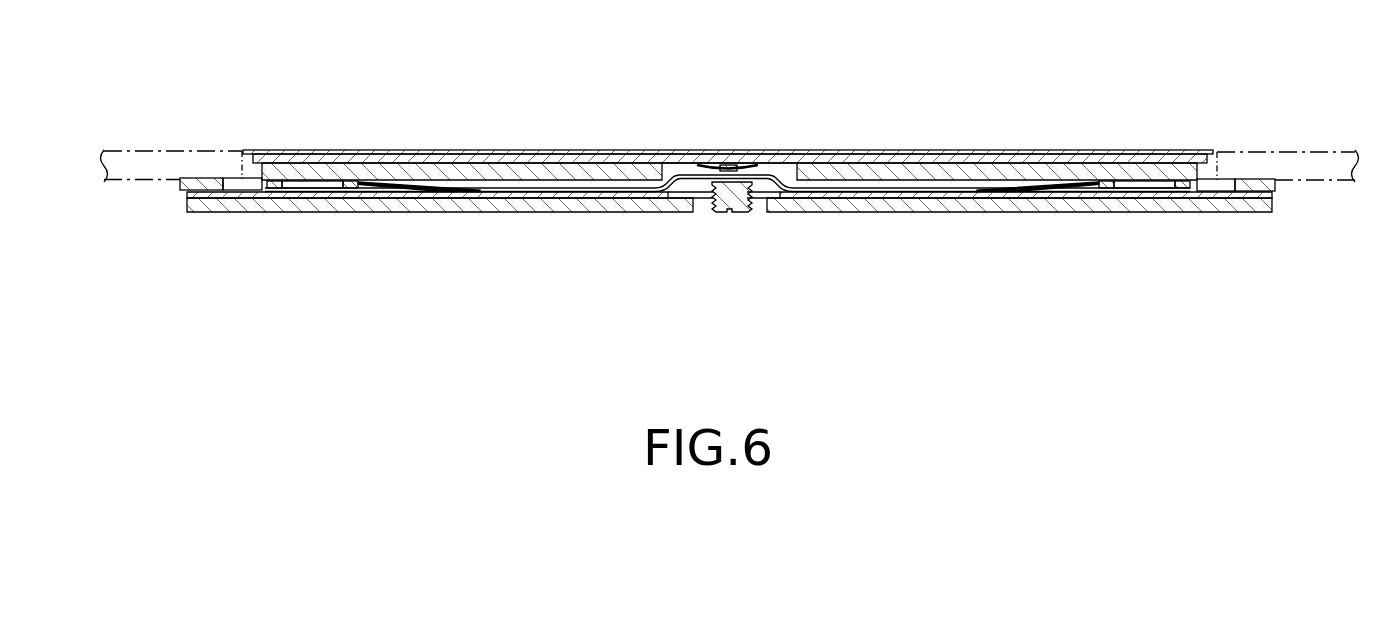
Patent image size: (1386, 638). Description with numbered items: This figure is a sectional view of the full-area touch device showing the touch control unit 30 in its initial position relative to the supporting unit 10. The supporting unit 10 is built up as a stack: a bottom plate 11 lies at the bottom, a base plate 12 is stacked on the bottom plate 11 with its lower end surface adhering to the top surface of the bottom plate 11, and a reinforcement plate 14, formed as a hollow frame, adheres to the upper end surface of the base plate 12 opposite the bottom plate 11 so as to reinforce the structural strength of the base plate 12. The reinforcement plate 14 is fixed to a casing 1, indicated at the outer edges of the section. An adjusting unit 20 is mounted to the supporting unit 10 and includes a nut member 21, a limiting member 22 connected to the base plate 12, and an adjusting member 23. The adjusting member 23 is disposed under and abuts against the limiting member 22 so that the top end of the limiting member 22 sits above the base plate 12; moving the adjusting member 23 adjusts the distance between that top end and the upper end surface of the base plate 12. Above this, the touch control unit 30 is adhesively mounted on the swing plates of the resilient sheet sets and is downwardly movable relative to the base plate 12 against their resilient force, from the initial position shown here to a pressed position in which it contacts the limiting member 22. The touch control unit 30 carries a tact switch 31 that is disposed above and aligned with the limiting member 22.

The casing 1 is at (1288, 136).
The supporting unit 10 is at (1122, 226).
The bottom plate 11 is at (1168, 202).
The base plate 12 is at (1243, 193).
The reinforcement plate 14 is at (1270, 183).
The adjusting unit 20 is at (696, 224).
The nut member 21 is at (728, 186).
The limiting member 22 is at (760, 176).
The adjusting member 23 is at (735, 200).
The touch control unit 30 is at (1010, 135).
The tact switch 31 is at (728, 169).